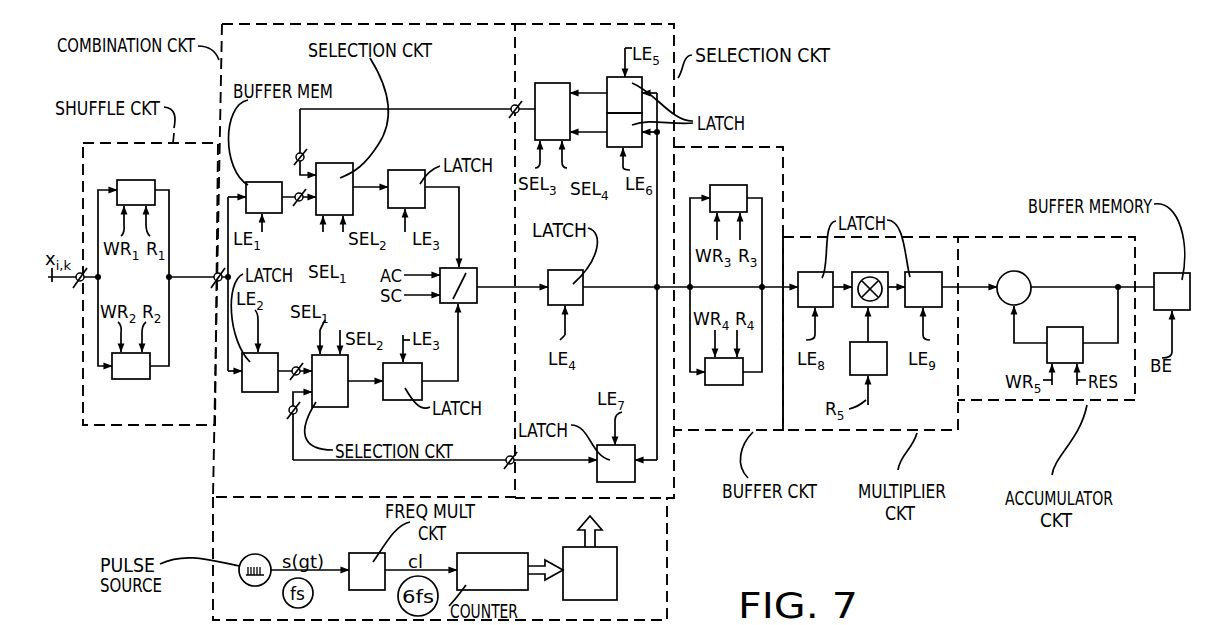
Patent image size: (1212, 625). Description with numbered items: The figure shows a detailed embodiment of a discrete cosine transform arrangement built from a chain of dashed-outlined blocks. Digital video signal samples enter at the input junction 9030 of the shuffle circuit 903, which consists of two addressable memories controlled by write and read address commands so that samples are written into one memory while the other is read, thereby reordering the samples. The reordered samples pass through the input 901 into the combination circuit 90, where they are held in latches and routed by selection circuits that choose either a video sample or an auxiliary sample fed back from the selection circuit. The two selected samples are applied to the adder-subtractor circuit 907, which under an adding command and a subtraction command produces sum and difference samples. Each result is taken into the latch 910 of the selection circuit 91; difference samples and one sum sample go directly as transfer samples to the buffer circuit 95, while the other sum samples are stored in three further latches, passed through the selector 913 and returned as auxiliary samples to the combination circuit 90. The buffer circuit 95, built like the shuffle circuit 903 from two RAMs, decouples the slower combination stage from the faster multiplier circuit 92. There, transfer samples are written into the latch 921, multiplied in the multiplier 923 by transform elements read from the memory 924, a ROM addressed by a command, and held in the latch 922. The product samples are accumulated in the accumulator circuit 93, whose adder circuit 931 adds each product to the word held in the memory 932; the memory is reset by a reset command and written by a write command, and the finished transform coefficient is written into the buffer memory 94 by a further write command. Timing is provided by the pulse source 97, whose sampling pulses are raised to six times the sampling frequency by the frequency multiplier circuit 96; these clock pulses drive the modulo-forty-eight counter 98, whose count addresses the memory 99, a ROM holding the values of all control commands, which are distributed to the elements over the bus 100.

The combination circuit 90 is at (211, 466).
The selection circuit 91 is at (674, 483).
The multiplier circuit 92 is at (868, 432).
The accumulator circuit 93 is at (1038, 402).
The buffer memory 94 is at (1167, 273).
The buffer circuit 95 is at (730, 432).
The frequency multiplier circuit 96 is at (366, 553).
The pulse source 97 is at (259, 554).
The modulo-48 counter 98 is at (488, 553).
The memory 99 is at (617, 580).
The bus 100 is at (598, 538).
The input 901 is at (213, 286).
The shuffle circuit 903 is at (152, 430).
The adder-subtractor circuit 907 is at (470, 305).
The latch 910 is at (565, 272).
The selector 913 is at (558, 83).
The latch 921 is at (812, 272).
The latch 922 is at (925, 275).
The multiplier 923 is at (870, 272).
The memory 924 is at (878, 377).
The adder circuit 931 is at (1012, 271).
The memory 932 is at (1065, 331).
The input junction 9030 is at (76, 285).